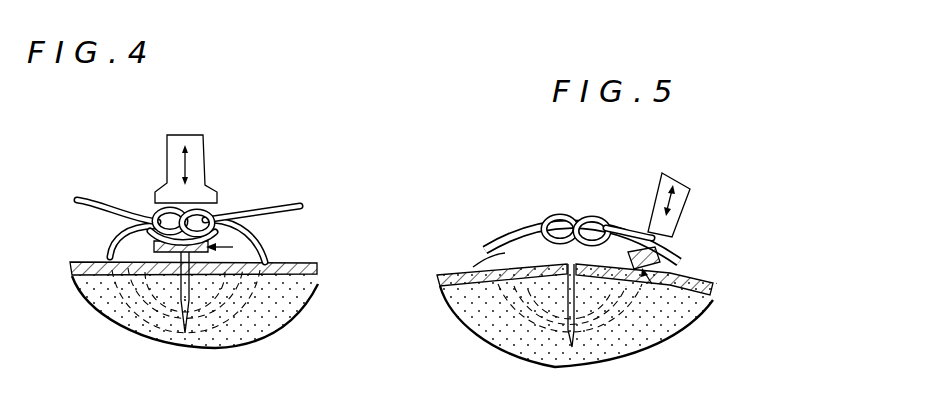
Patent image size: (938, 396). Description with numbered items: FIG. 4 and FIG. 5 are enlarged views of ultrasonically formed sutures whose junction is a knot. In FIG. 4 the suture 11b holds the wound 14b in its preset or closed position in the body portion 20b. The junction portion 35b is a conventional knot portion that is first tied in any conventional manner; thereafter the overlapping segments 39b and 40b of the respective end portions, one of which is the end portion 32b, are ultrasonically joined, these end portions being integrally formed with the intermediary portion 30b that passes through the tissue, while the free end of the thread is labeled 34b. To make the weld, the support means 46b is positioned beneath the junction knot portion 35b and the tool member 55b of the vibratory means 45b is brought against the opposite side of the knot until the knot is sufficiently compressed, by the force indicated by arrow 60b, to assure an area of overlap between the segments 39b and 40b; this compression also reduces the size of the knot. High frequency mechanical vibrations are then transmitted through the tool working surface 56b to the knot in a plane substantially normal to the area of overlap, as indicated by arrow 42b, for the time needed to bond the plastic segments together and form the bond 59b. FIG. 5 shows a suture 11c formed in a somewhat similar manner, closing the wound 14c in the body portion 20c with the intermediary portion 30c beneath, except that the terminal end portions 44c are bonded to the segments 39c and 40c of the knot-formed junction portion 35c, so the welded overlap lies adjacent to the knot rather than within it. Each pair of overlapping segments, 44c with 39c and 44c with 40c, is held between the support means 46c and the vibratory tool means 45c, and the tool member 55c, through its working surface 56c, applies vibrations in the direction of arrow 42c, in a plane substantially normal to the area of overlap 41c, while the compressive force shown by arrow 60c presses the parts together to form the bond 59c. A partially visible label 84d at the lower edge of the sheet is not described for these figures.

In FIG. 4, the suture 11b is at (76, 238).
In FIG. 4, the wound 14b is at (186, 303).
In FIG. 4, the body portion 20b is at (104, 329).
In FIG. 4, the intermediary portion 30b is at (197, 307).
In FIG. 4, the end portion 32b is at (89, 200).
In FIG. 4, the suture free end 34b is at (302, 203).
In FIG. 4, the junction portion 35b is at (135, 208).
In FIG. 4, the overlapping segment 39b is at (71, 263).
In FIG. 4, the overlapping segment 40b is at (252, 230).
In FIG. 4, the arrow indicating vibration direction 42b is at (190, 157).
In FIG. 4, the vibratory means 45b is at (178, 124).
In FIG. 4, the support means 46b is at (283, 264).
In FIG. 4, the tool member 55b is at (204, 134).
In FIG. 4, the tool working surface 56b is at (213, 210).
In FIG. 4, the bond 59b is at (194, 203).
In FIG. 4, the arrow indicating compressive force 60b is at (130, 182).
In FIG. 5, the suture 11c is at (462, 255).
In FIG. 5, the needle 14c is at (581, 343).
In FIG. 5, the tissue body 20c is at (672, 352).
In FIG. 5, the tissue surface 30c is at (563, 330).
In FIG. 5, the junction portion 35c is at (579, 200).
In FIG. 5, the segment 39c is at (477, 281).
In FIG. 5, the segment 40c is at (678, 270).
In FIG. 5, the area of overlap 41c is at (489, 240).
In FIG. 5, the arrow indicating vibration direction 42c is at (692, 190).
In FIG. 5, the terminal end portion 44c is at (486, 240).
In FIG. 5, the vibratory tool means 45c is at (666, 165).
In FIG. 5, the support means 46c is at (704, 293).
In FIG. 5, the tool member 55c is at (661, 184).
In FIG. 5, the knot 56c is at (643, 230).
In FIG. 5, the suture segment 59c is at (514, 233).
In FIG. 5, the pushing direction arrow 60c is at (718, 213).
In FIG. 5, the fastener 84d is at (675, 388).